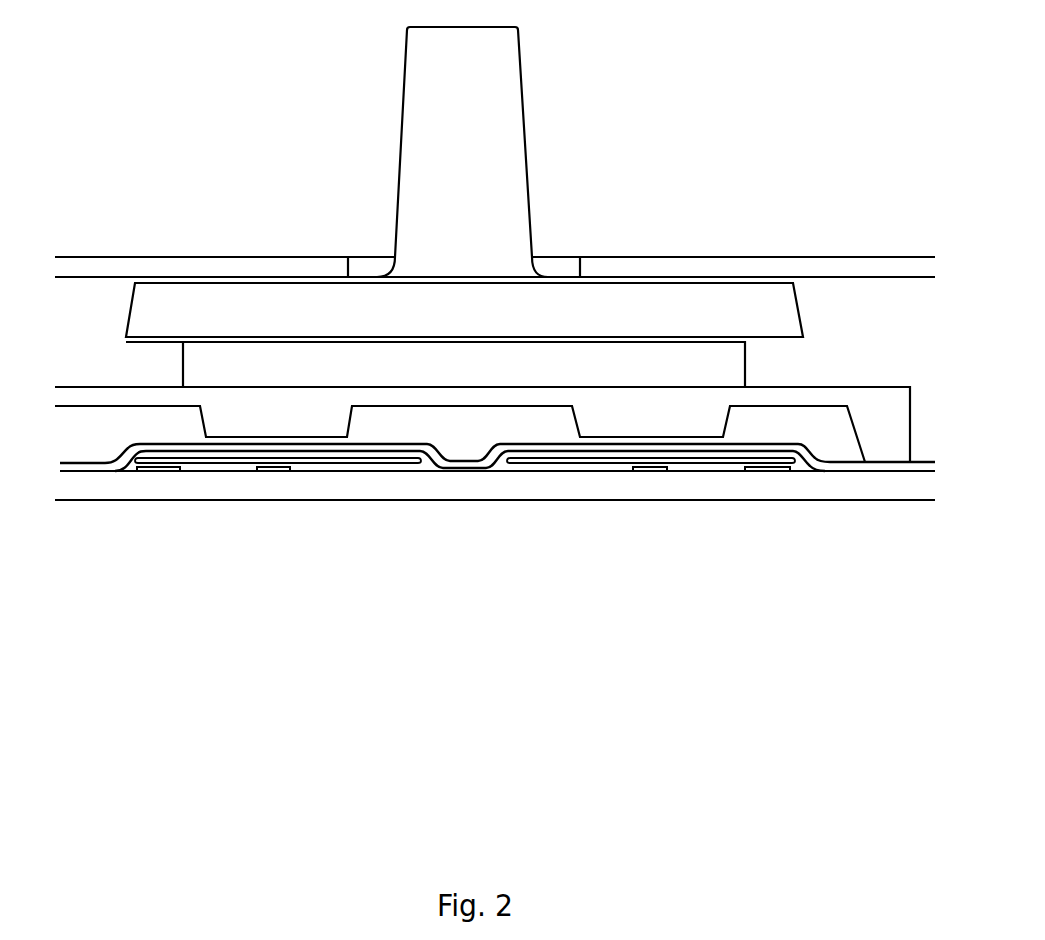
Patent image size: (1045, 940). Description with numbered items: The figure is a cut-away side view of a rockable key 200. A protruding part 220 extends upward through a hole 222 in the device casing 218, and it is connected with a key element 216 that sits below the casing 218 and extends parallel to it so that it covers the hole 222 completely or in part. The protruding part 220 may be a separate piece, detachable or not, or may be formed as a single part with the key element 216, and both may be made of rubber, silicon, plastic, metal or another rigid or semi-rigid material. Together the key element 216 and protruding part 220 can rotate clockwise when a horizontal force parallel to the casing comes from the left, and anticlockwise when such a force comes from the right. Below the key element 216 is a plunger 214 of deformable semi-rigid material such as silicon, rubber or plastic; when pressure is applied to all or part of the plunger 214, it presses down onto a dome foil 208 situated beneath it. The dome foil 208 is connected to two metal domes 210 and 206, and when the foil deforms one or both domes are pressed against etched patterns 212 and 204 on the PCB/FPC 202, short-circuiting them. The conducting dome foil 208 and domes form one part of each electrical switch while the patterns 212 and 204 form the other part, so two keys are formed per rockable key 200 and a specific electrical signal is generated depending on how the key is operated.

The rockable key 200 is at (335, 53).
The PCB/FPC 202 is at (897, 485).
The etched pattern 204 is at (648, 470).
The metal dome 206 is at (580, 462).
The dome foil 208 is at (455, 473).
The metal dome 210 is at (348, 457).
The etched pattern 212 is at (165, 475).
The plunger 214 is at (878, 402).
The key element 216 is at (712, 317).
The device casing 218 is at (122, 268).
The protruding part 220 is at (452, 150).
The hole 222 is at (556, 267).